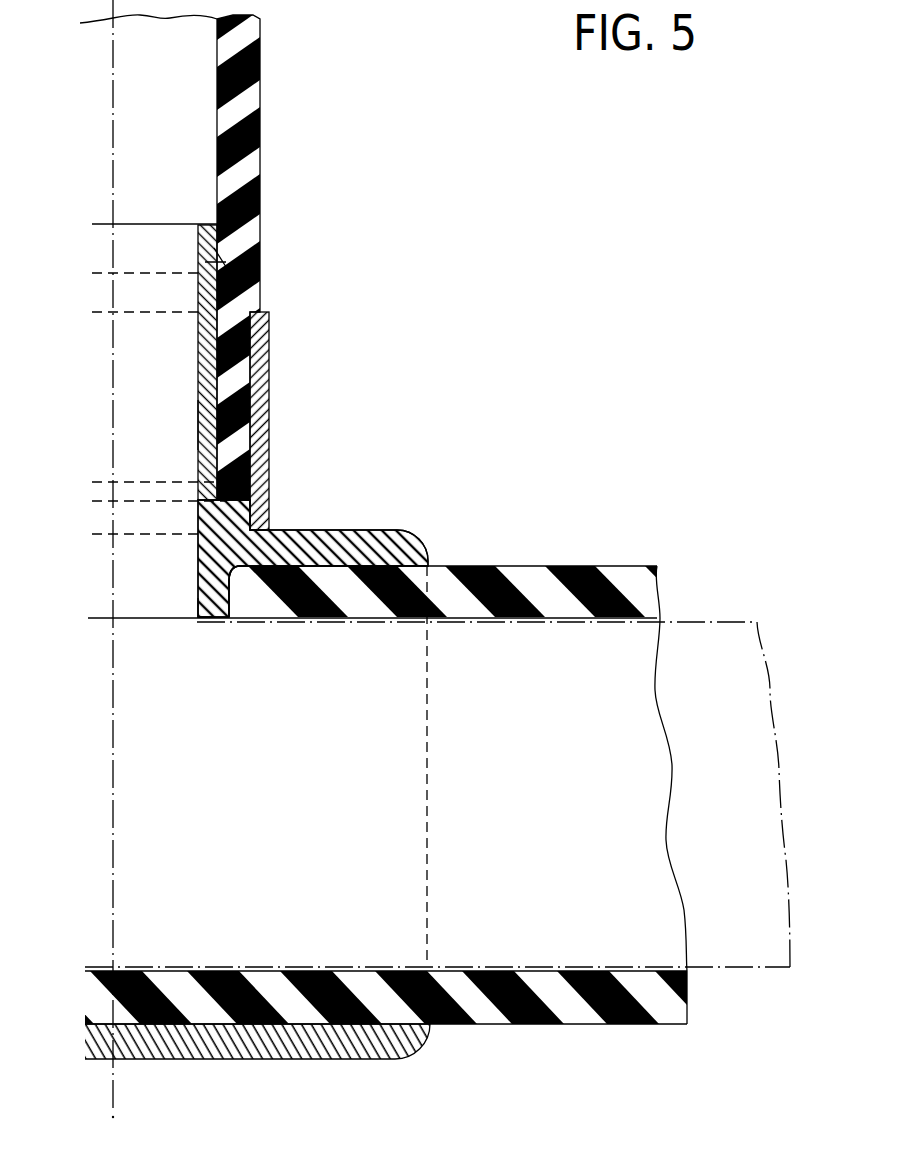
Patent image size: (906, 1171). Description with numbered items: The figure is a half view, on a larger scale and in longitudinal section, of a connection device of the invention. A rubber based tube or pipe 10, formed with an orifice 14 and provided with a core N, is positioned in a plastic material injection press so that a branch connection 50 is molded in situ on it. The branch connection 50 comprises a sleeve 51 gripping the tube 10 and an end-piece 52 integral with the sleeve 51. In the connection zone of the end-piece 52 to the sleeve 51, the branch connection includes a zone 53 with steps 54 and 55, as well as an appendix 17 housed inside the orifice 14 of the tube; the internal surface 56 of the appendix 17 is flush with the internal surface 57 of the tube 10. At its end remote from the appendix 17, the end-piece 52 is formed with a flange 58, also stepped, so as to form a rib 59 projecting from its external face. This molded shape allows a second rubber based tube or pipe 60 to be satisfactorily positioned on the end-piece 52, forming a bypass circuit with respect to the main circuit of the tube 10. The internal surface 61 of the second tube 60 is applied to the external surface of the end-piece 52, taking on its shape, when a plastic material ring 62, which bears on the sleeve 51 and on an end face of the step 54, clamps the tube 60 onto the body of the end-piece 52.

The rubber based tube or pipe 10 is at (523, 578).
The orifice 14 is at (230, 577).
The appendix 17 is at (196, 605).
The branch connection 50 is at (365, 501).
The sleeve 51 is at (333, 1042).
The end-piece 52 is at (198, 330).
The zone 53 is at (238, 465).
The step 54 is at (270, 510).
The step 55 is at (213, 480).
The internal surface of appendix 56 is at (208, 618).
The internal surface of tube 57 is at (372, 618).
The flange 58 is at (223, 248).
The rib 59 is at (262, 272).
The second rubber based tube or pipe 60 is at (245, 58).
The internal surface of second tube 61 is at (198, 422).
The plastic material ring 62 is at (262, 343).
The core N is at (736, 738).